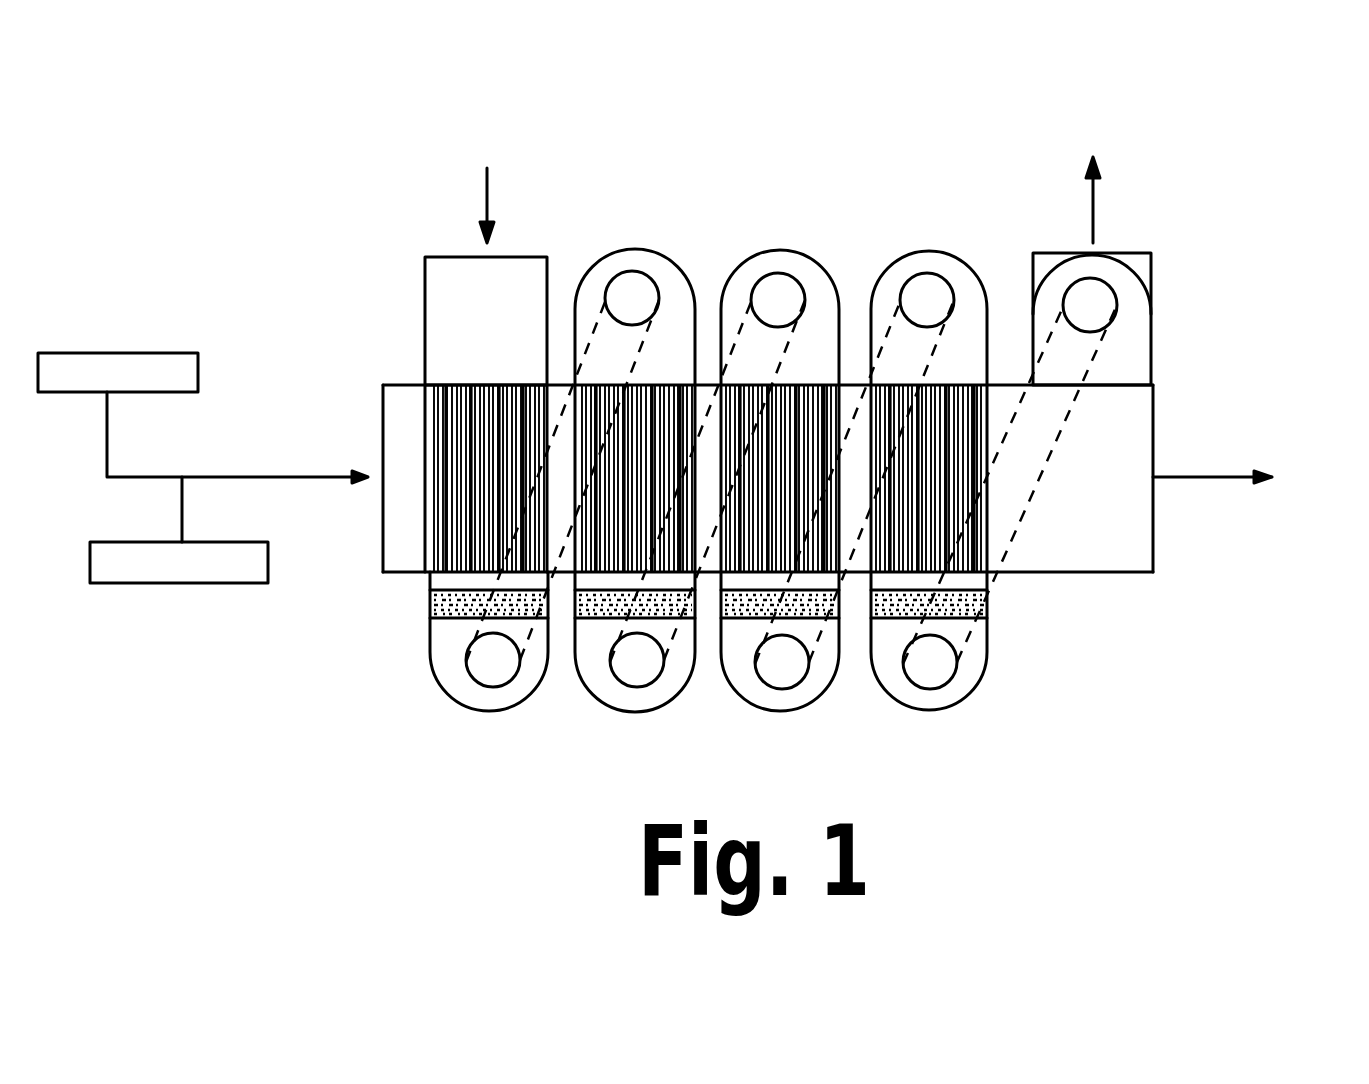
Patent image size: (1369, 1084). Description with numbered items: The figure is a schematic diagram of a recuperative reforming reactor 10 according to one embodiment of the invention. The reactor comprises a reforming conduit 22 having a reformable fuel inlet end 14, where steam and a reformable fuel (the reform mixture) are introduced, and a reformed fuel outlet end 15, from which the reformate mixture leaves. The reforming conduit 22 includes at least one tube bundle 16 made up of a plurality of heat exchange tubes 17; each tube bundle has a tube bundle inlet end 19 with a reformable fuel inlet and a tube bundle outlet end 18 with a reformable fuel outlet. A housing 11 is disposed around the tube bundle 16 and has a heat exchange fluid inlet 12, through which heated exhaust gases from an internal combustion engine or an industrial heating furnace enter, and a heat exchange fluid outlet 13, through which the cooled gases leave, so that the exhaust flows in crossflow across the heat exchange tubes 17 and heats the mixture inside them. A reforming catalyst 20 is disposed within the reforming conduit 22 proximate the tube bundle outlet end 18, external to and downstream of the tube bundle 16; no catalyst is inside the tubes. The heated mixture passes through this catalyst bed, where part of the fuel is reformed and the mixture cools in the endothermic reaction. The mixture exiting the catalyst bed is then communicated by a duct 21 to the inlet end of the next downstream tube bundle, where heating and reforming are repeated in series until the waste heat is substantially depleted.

The recuperative reforming reactor 10 is at (270, 192).
The housing 11 is at (1045, 572).
The heat exchange fluid inlet 12 is at (383, 540).
The heat exchange fluid outlet 13 is at (1153, 543).
The reformable fuel inlet end 14 is at (525, 257).
The reformed fuel outlet end 15 is at (1125, 253).
The tube bundle 16 is at (427, 445).
The heat exchange tubes 17 is at (432, 395).
The tube bundle outlet end 18 is at (462, 573).
The tube bundle inlet end 19 is at (463, 385).
The reforming catalyst 20 is at (433, 607).
The duct 21 is at (553, 672).
The reforming conduit 22 is at (425, 272).